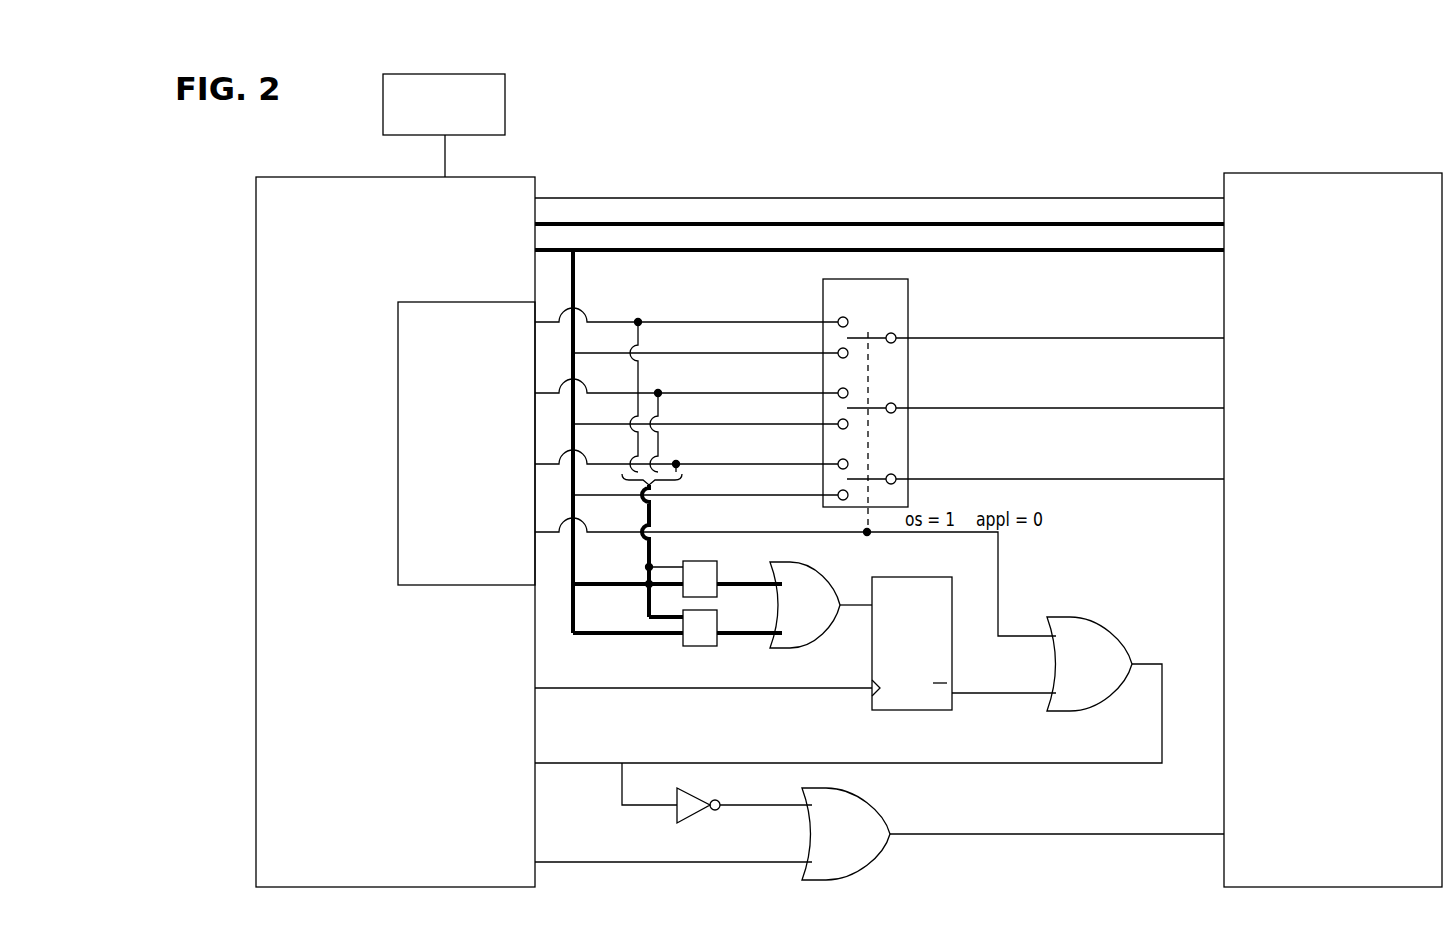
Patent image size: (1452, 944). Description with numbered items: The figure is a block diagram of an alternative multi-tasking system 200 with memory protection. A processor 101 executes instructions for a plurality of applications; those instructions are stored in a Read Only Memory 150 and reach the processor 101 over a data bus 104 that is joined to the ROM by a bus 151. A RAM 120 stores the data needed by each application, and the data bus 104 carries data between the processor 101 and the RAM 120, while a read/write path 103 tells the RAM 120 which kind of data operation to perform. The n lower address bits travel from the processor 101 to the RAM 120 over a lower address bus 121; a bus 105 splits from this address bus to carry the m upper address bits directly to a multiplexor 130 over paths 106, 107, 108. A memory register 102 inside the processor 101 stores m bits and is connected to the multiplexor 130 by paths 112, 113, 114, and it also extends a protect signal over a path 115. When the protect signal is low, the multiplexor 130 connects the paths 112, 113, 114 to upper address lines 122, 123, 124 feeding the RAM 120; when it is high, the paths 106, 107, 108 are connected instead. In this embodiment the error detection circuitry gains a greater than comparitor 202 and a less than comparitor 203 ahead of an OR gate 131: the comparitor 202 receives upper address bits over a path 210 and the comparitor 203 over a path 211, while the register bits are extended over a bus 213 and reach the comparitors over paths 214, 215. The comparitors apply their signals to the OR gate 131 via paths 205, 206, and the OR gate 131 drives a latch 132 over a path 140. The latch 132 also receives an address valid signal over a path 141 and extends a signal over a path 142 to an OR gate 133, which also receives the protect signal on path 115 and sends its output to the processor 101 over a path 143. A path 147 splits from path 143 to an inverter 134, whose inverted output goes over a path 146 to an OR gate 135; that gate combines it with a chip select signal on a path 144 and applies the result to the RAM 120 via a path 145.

The processor 101 is at (256, 192).
The memory register 102 is at (398, 322).
The read/write path 103 is at (680, 198).
The data bus 104 is at (785, 224).
The bus 105 is at (576, 265).
The path 106 is at (745, 353).
The path 107 is at (745, 424).
The path 108 is at (745, 495).
The path 112 is at (805, 322).
The path 113 is at (805, 393).
The path 114 is at (805, 464).
The path 115 is at (745, 532).
The RAM 120 is at (1410, 173).
The lower address bus 121 is at (1008, 253).
The upper address line 122 is at (985, 338).
The upper address line 123 is at (985, 408).
The upper address line 124 is at (985, 479).
The multiplexor 130 is at (908, 288).
The OR gate 131 is at (835, 572).
The latch 132 is at (872, 703).
The OR gate 133 is at (1095, 622).
The inverter 134 is at (690, 795).
The OR gate 135 is at (880, 858).
The path 140 is at (860, 612).
The path 141 is at (655, 688).
The path 142 is at (985, 693).
The path 143 is at (950, 762).
The path 144 is at (620, 862).
The path 145 is at (1040, 832).
The path 146 is at (775, 806).
The path 147 is at (637, 805).
The Read Only Memory (ROM) 150 is at (505, 95).
The bus 151 is at (447, 150).
The multi-tasking system 200 is at (1128, 145).
The greater than comparitor 202 is at (722, 562).
The less than comparitor 203 is at (705, 646).
The path 205 is at (732, 588).
The path 206 is at (740, 635).
The path 210 is at (613, 583).
The path 211 is at (598, 635).
The bus 213 is at (662, 505).
The path 214 is at (660, 567).
The path 215 is at (657, 620).